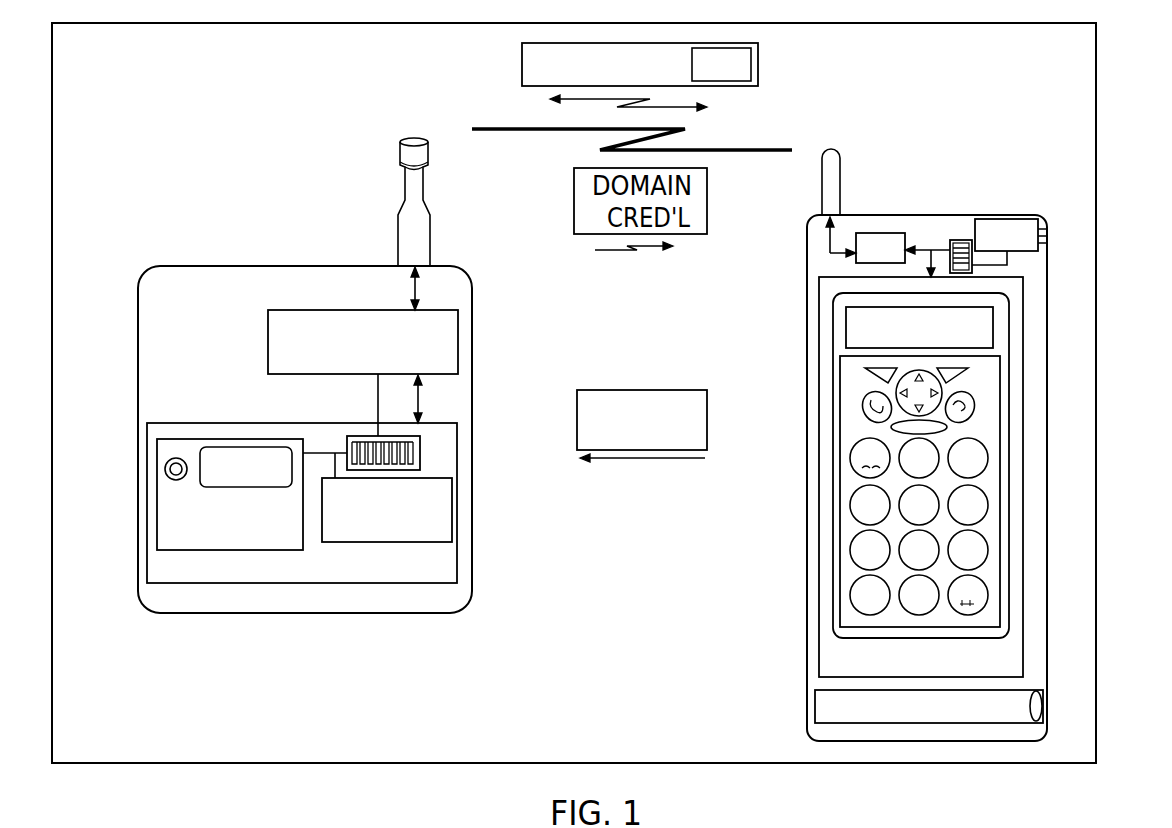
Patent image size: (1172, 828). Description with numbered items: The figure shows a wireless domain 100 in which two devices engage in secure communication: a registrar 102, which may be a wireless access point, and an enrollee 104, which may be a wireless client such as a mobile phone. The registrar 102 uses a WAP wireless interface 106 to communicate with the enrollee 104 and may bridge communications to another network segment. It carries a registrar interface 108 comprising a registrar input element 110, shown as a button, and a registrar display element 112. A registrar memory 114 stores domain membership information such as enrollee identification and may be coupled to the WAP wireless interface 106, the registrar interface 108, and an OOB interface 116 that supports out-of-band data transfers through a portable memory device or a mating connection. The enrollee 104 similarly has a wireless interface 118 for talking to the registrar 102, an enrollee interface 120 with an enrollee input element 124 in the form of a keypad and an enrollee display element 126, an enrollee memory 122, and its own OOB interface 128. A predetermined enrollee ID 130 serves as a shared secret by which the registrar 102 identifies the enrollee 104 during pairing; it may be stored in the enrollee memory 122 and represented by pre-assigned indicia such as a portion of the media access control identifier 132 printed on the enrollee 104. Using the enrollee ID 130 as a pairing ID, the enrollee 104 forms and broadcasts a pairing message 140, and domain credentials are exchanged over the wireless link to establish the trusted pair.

The wireless domain 100 is at (468, 738).
The registrar 102 is at (212, 275).
The enrollee 104 is at (921, 222).
The WAP wireless interface 106 is at (268, 343).
The registrar interface 108 is at (157, 528).
The registrar input element 110 is at (165, 469).
The registrar display element 112 is at (247, 447).
The registrar memory 114 is at (420, 452).
The OOB interface 116 is at (435, 492).
The wireless interface 118 is at (876, 233).
The enrollee interface 120 is at (1023, 332).
The enrollee memory 122 is at (960, 240).
The enrollee input element 124 is at (975, 415).
The enrollee display element 126 is at (846, 337).
The OOB interface 128 is at (1010, 219).
The predetermined enrollee ID 130 is at (640, 390).
The media access control identifier 132 is at (850, 723).
The pairing message 140 is at (522, 62).